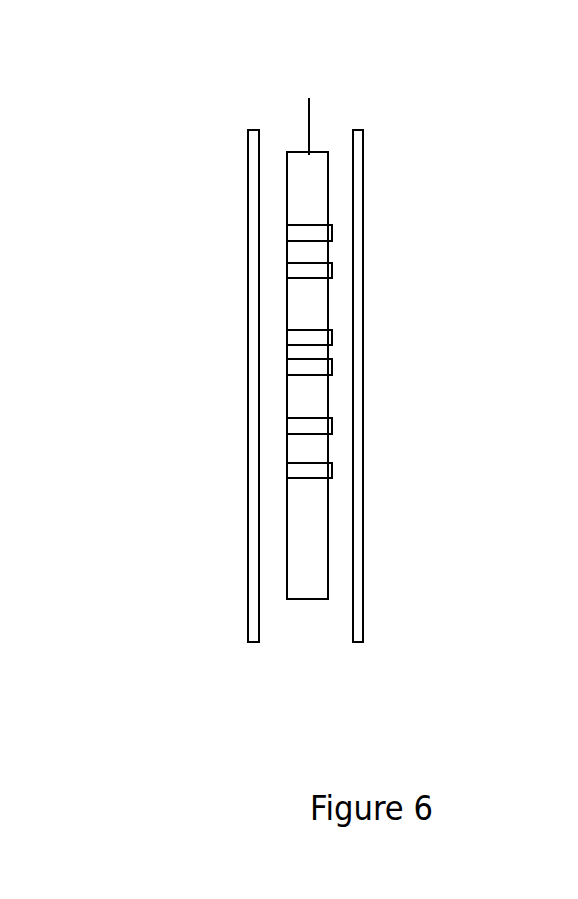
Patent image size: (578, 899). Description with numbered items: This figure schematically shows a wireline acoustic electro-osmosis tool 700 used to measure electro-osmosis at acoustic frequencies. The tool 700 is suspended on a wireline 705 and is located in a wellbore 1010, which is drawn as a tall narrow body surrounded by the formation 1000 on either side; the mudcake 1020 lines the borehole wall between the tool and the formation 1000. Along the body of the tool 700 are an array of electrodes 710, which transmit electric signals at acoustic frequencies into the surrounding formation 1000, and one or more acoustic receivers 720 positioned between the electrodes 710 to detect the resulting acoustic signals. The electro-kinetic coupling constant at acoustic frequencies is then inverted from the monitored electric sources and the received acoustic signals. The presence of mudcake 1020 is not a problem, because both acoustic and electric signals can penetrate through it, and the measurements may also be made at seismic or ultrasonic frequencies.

The wireline acoustic electro-osmosis tool 700 is at (327, 138).
The wireline 705 is at (298, 120).
The array of electrodes 710 is at (280, 233).
The acoustic receivers 720 is at (280, 338).
The formation 1000 is at (311, 473).
The wellbore 1010 is at (311, 398).
The mudcake 1020 is at (359, 139).